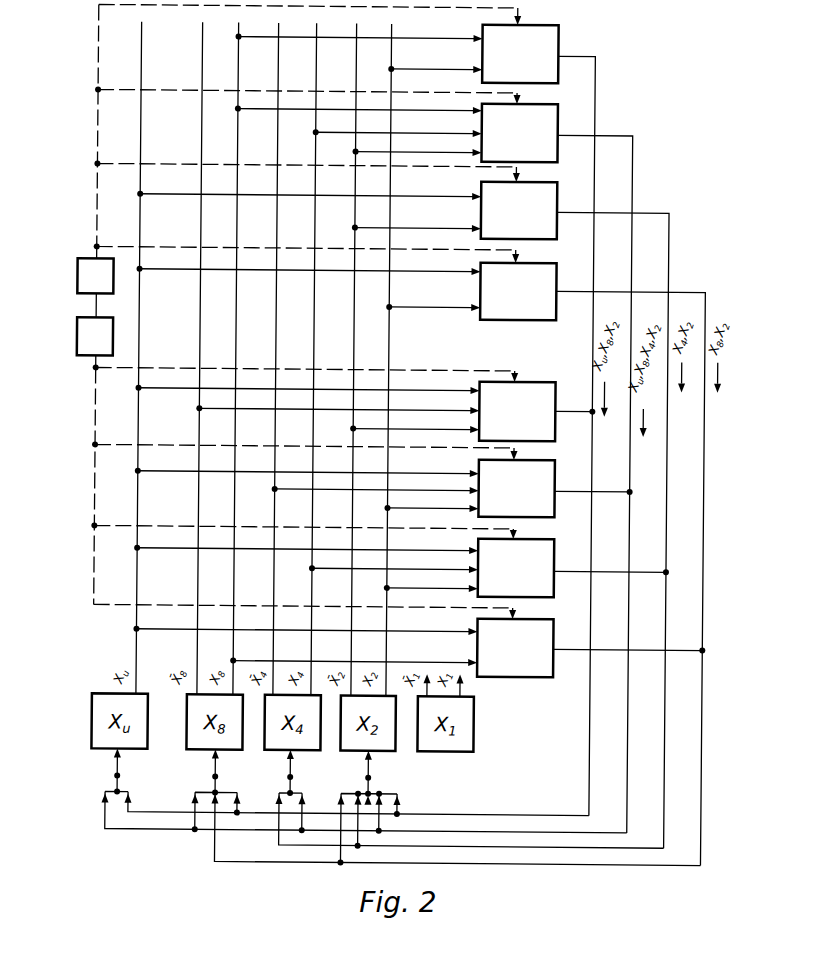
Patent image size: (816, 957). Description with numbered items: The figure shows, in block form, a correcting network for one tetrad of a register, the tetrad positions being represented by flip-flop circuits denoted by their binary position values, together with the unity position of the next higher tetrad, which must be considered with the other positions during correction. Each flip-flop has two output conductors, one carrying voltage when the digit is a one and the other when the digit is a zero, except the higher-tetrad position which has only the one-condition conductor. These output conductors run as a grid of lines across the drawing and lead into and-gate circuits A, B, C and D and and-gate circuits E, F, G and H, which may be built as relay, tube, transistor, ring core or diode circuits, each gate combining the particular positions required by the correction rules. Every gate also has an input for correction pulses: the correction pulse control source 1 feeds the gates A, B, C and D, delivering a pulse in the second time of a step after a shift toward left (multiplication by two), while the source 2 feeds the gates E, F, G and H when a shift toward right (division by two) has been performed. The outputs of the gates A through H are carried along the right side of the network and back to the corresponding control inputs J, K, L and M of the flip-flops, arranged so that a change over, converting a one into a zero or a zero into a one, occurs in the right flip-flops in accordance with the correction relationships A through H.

The correction pulse control source 1 is at (95, 275).
The correction pulse source 2 is at (95, 336).
The and-gate circuit A is at (536, 420).
The and-gate circuit B is at (554, 468).
The and-gate circuit C is at (573, 515).
The and-gate circuit D is at (590, 564).
The and-gate circuit E is at (536, 412).
The and-gate circuit F is at (553, 489).
The and-gate circuit G is at (572, 569).
The and-gate circuit H is at (589, 649).
The control input J is at (364, 790).
The control input K is at (446, 807).
The control input L is at (469, 799).
The control input M is at (370, 808).